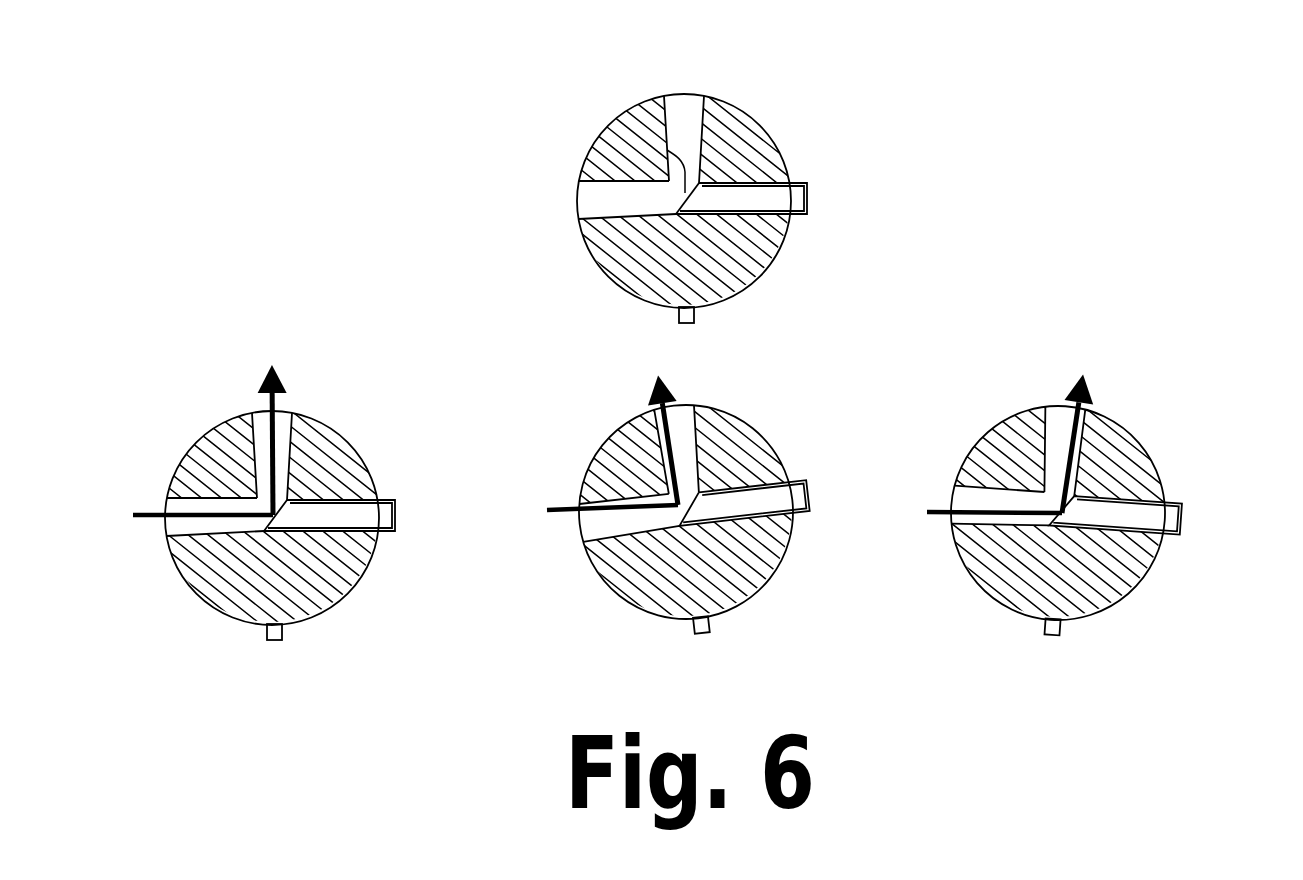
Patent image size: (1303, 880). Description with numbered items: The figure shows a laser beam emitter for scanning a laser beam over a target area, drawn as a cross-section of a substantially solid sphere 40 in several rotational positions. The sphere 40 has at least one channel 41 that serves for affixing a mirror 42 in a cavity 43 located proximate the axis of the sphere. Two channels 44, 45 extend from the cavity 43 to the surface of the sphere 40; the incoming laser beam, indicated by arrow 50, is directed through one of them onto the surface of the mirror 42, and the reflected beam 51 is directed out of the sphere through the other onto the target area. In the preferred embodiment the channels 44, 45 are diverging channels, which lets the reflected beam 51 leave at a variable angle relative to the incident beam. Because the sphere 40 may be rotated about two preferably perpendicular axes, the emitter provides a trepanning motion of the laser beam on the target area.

The substantially solid sphere 40 is at (770, 145).
The channel 41 is at (790, 222).
The mirror 42 is at (677, 206).
The cavity 43 is at (667, 150).
The channel 44 is at (688, 104).
The channel 45 is at (582, 188).
The arrow 50 is at (134, 517).
The reflected beam 51 is at (262, 362).